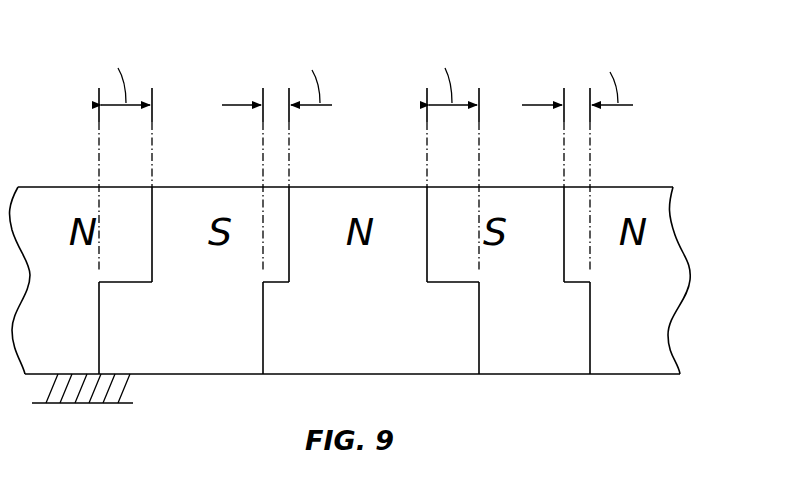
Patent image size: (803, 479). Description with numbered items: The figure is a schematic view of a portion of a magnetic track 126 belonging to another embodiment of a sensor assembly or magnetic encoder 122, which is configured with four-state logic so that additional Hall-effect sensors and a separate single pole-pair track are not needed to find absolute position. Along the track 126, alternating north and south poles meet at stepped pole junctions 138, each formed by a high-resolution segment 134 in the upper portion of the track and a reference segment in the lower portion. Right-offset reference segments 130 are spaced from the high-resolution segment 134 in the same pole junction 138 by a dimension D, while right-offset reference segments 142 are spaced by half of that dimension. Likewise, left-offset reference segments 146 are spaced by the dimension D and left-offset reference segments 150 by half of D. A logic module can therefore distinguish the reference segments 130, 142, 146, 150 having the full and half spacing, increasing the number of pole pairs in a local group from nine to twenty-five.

The magnetic encoder 122 is at (678, 60).
The magnetic track 126 is at (692, 172).
The right-offset reference segment 130 is at (479, 343).
The high-resolution segment 134 is at (152, 212).
The pole junction 138 is at (130, 283).
The right-offset reference segment 142 is at (590, 343).
The left-offset reference segment 146 is at (99, 328).
The left-offset reference segment 150 is at (263, 330).